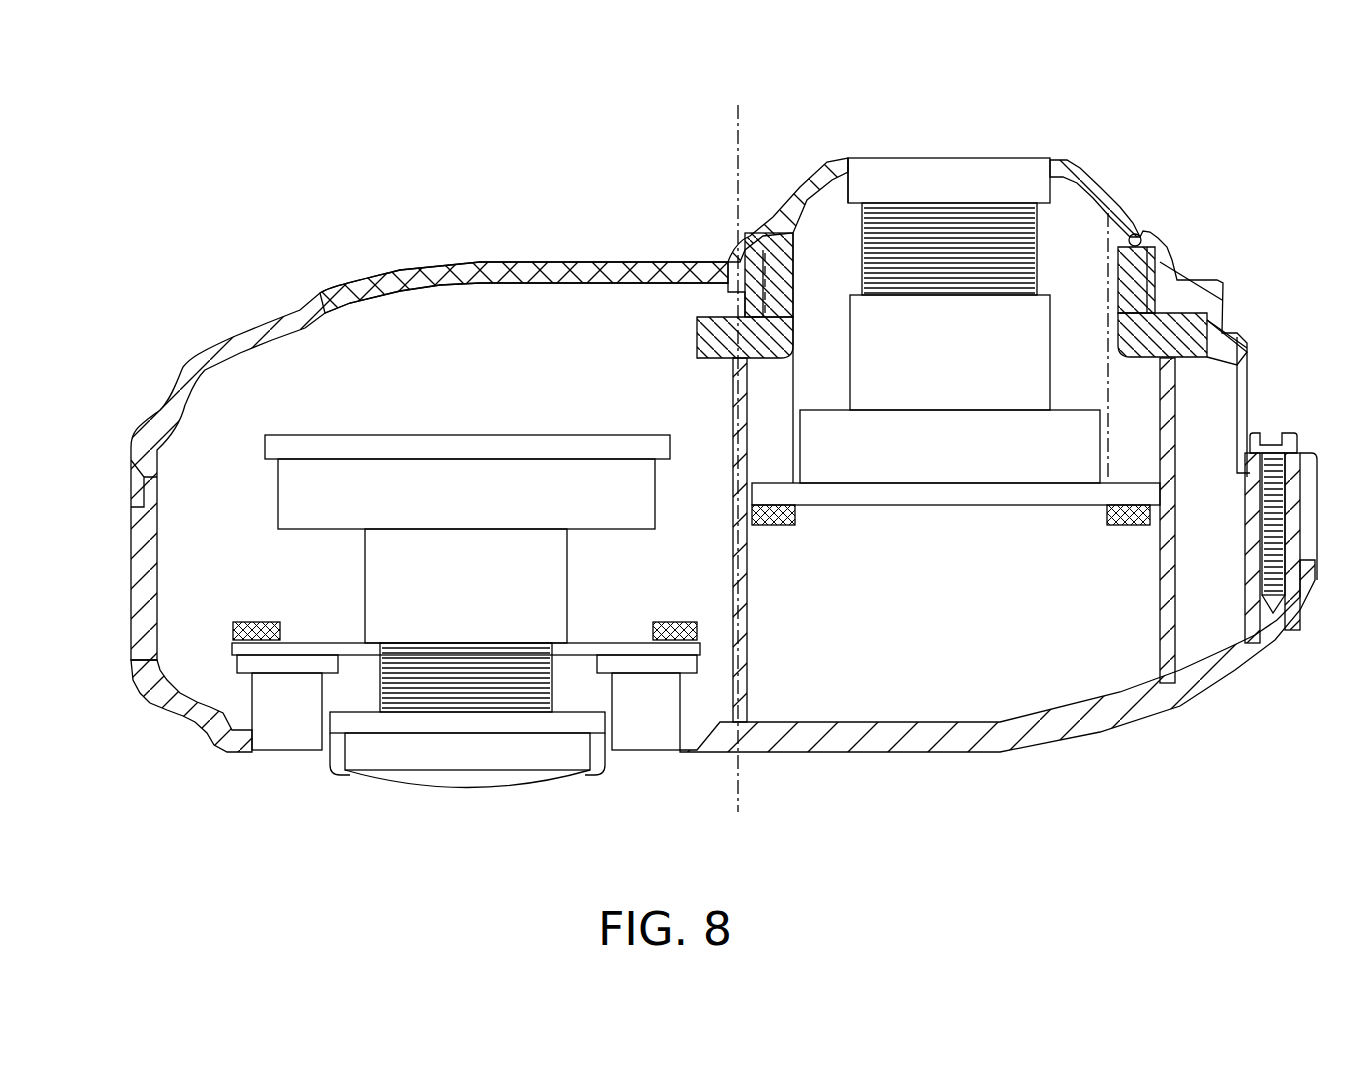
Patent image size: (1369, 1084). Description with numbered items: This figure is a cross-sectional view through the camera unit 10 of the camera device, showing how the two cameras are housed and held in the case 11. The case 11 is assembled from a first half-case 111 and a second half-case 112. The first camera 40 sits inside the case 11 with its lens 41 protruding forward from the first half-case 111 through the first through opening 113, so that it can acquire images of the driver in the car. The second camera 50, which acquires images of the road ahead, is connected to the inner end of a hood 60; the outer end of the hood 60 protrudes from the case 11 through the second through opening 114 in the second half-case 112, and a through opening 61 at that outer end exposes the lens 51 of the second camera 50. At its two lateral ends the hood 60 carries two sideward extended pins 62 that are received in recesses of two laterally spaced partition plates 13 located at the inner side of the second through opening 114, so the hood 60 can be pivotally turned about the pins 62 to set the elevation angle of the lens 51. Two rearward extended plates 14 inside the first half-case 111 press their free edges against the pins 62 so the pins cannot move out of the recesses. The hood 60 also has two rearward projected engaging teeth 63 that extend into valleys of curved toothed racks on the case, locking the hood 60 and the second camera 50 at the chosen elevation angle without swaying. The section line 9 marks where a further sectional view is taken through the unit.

The section line 9- 9 is at (730, 118).
The camera unit 10 is at (1254, 362).
The case 11 is at (135, 507).
The partition plates 13 is at (735, 293).
The rearward extended plates 14 is at (745, 640).
The first camera 40 is at (445, 570).
The lens 41 is at (490, 790).
The second camera 50 is at (970, 395).
The lens 51 is at (945, 158).
The hood 60 is at (1100, 198).
The through opening 61 is at (853, 170).
The pins 62 is at (718, 347).
The engaging teeth 63 is at (742, 303).
The first half-case 111 is at (865, 740).
The second half-case 112 is at (582, 276).
The first through opening 113 is at (345, 770).
The second through opening 114 is at (1141, 236).